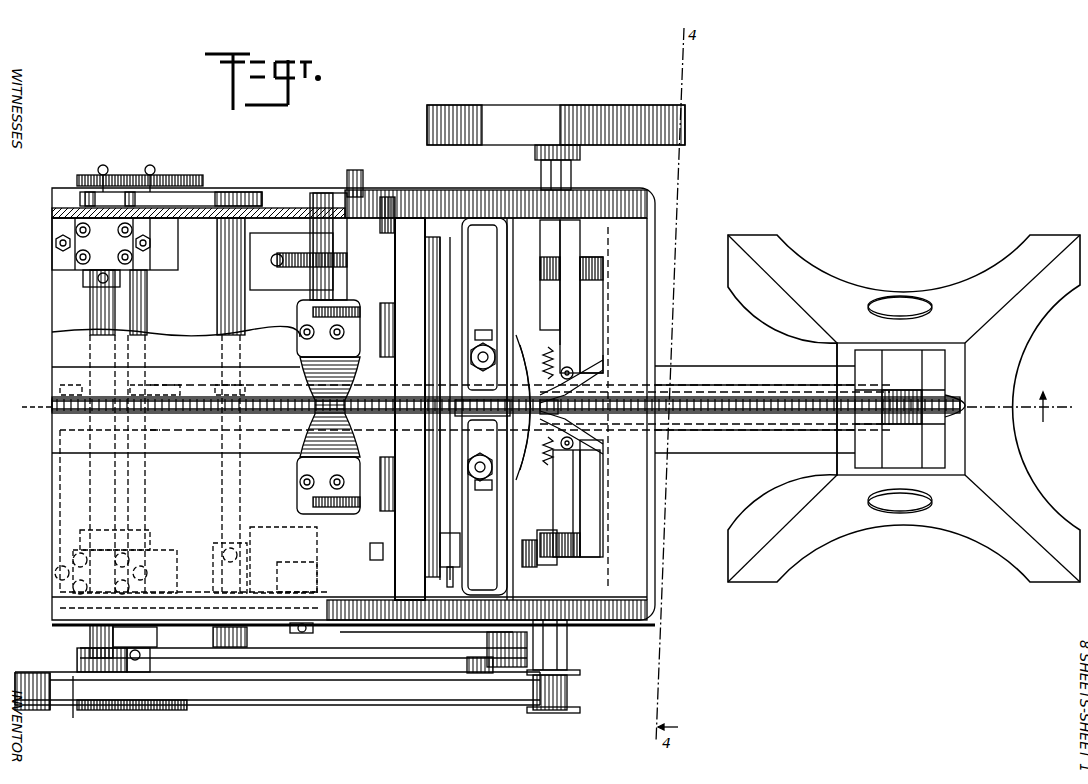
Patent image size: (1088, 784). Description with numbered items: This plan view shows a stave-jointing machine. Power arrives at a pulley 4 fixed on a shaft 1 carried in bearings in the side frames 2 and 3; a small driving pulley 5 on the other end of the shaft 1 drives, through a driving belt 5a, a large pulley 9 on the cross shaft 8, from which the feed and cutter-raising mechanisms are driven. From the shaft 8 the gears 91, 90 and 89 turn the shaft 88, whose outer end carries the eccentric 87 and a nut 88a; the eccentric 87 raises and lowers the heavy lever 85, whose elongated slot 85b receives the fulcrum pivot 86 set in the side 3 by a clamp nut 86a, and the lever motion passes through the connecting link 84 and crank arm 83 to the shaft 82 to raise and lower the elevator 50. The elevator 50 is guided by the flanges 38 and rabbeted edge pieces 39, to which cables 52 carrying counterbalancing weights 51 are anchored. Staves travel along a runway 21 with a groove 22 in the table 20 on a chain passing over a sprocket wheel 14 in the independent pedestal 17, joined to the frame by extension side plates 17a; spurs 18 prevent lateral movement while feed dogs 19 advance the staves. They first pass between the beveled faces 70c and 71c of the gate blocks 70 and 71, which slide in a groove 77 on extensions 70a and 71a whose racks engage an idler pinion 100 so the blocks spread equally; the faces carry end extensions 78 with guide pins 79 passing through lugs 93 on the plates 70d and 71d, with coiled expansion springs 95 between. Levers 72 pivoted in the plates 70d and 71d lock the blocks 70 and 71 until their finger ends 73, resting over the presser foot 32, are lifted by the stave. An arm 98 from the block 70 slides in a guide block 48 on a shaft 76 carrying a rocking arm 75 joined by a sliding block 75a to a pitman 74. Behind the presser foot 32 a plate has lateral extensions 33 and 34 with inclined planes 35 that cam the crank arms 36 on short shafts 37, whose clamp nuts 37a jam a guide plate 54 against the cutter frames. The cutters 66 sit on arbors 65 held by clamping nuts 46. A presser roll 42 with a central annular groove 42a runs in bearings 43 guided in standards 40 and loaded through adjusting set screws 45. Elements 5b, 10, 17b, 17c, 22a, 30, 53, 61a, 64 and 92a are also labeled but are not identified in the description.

The shaft 1 is at (572, 166).
The side frame 2 is at (38, 620).
The side frame 3 is at (55, 210).
The pulley 4 is at (515, 140).
The small driving pulley 5 is at (572, 713).
The driving belt 5a is at (278, 696).
The pulley 5b is at (152, 710).
The cross shaft 8 is at (90, 299).
The large pulley 9 is at (50, 710).
The rack bar 10 is at (55, 420).
The sprocket wheel 14 is at (950, 398).
The independent pedestal 17 is at (1000, 465).
The extension side plates 17a is at (715, 445).
The guide 17b is at (195, 412).
The upper guide bar 17c is at (710, 358).
The sharpened spurs 18 is at (235, 414).
The feed dogs 19 is at (150, 384).
The table 20 is at (658, 262).
The runway 21 is at (60, 369).
The groove 22 is at (170, 383).
The bottom plate 22a is at (650, 612).
The slide plate 30 is at (500, 548).
The presser foot 32 is at (455, 408).
The lateral extension 33 is at (648, 203).
The lateral extension 34 is at (407, 414).
The inclined plane 35 is at (440, 362).
The crank arm 36 is at (330, 540).
The short shaft 37 is at (407, 389).
The clamp nut 37a is at (440, 349).
The flange 38 is at (392, 210).
The rabbeted edge piece 39 is at (372, 200).
The standard 40 is at (300, 345).
The presser roll 42 is at (318, 383).
The central annular groove 42a is at (329, 432).
The bearing 43 is at (305, 318).
The adjusting set screw 45 is at (545, 535).
The clamping nut 46 is at (465, 482).
The guide block 48 is at (540, 572).
The elevator 50 is at (405, 248).
The counterbalancing weight 51 is at (295, 297).
The cable 52 is at (300, 254).
The screw block 53 is at (300, 290).
The guide plate 54 is at (425, 553).
The slot 61a is at (490, 310).
The pin 64 is at (480, 500).
The arbor 65 is at (480, 345).
The cutter 66 is at (500, 515).
The gate block 70 is at (603, 488).
The extension 70a is at (582, 240).
The beveled face 70c is at (608, 446).
The plate 70d is at (603, 465).
The gate block 71 is at (603, 348).
The extension 71a is at (603, 571).
The beveled face 71c is at (580, 378).
The plate 71d is at (603, 262).
The lever 72 is at (590, 300).
The finger end 73 is at (575, 392).
The pitman 74 is at (447, 575).
The rocking arm 75 is at (495, 520).
The sliding block 75a is at (440, 540).
The shaft 76 is at (525, 385).
The groove 77 is at (548, 248).
The end extension 78 is at (549, 395).
The guide pin 79 is at (555, 340).
The shaft 82 is at (225, 300).
The crank arm 83 is at (215, 640).
The connecting link 84 is at (298, 632).
The heavy lever 85 is at (178, 640).
The elongated slot 85b is at (400, 665).
The fulcrum pivot 86 is at (485, 678).
The clamp nut 86a is at (505, 663).
The eccentric 87 is at (170, 620).
The shaft 88 is at (148, 293).
The nut 88a is at (135, 672).
The gear 89 is at (143, 165).
The gear 90 is at (195, 174).
The gear 91 is at (85, 165).
The post 92a is at (348, 175).
The lug 93 is at (573, 370).
The coiled expansion spring 95 is at (545, 345).
The arm 98 is at (522, 570).
The idler pinion 100 is at (603, 315).